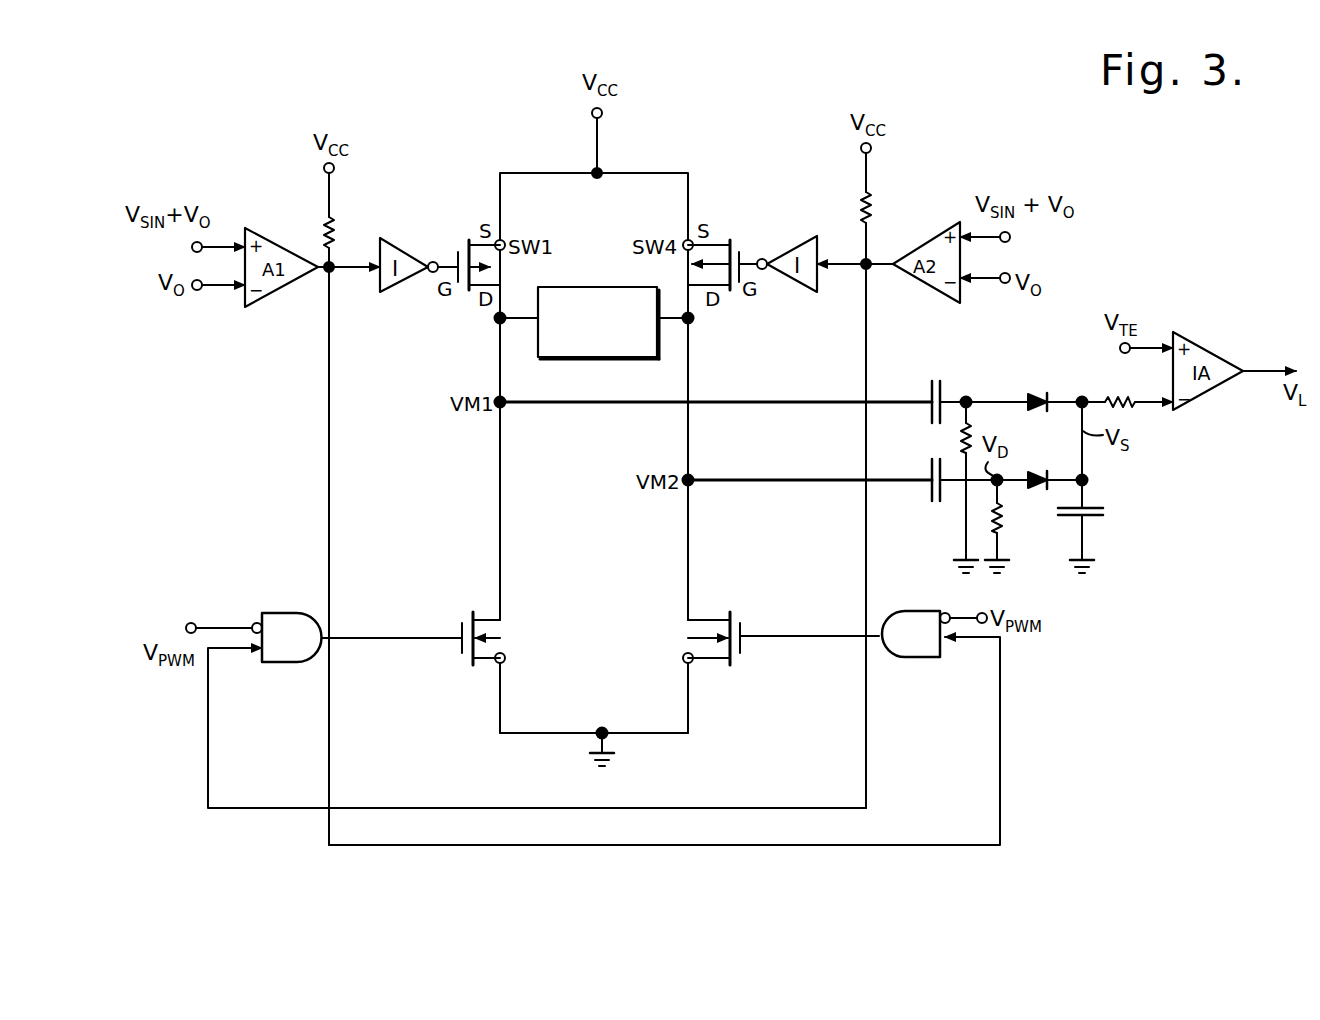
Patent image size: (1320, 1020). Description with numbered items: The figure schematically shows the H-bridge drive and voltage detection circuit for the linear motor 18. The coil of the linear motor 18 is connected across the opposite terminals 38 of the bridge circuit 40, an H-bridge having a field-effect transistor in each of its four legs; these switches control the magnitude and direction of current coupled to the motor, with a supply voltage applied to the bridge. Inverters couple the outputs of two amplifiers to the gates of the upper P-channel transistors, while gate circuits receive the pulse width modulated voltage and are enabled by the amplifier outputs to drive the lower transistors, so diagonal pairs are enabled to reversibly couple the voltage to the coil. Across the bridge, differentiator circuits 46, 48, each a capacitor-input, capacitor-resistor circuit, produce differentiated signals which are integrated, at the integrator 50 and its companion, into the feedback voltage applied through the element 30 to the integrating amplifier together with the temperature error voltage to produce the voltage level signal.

The linear motor 18 is at (656, 360).
The opposite terminals 38 is at (497, 322).
The bridge circuit 40 is at (597, 546).
The differentiator circuit 46 is at (968, 366).
The differentiator circuit 48 is at (955, 484).
The integrator 50 is at (1086, 480).
The resistor 30 is at (1138, 406).